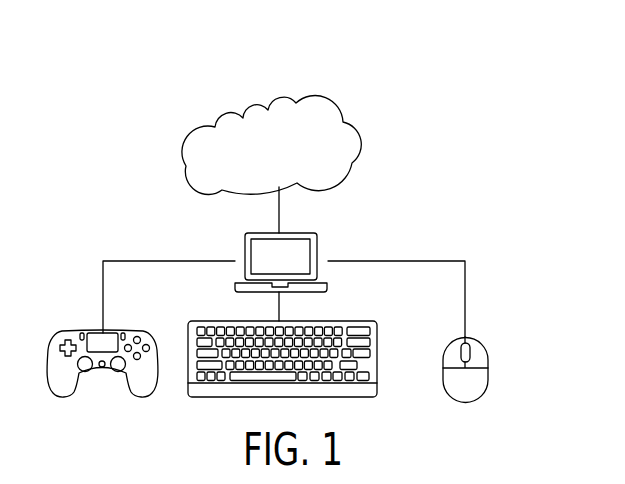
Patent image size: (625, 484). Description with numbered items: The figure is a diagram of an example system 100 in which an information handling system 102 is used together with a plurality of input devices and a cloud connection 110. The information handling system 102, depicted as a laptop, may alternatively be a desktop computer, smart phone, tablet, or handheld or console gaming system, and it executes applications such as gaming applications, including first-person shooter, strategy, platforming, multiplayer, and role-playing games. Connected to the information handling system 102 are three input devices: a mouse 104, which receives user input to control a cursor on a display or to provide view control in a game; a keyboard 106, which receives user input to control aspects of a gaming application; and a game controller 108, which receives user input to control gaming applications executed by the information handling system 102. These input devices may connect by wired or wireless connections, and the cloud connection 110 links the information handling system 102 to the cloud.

The system 100 is at (414, 86).
The information handling system 102 is at (317, 238).
The mouse 104 is at (488, 368).
The keyboard 106 is at (378, 325).
The game controller 108 is at (140, 332).
The cloud connection 110 is at (282, 97).